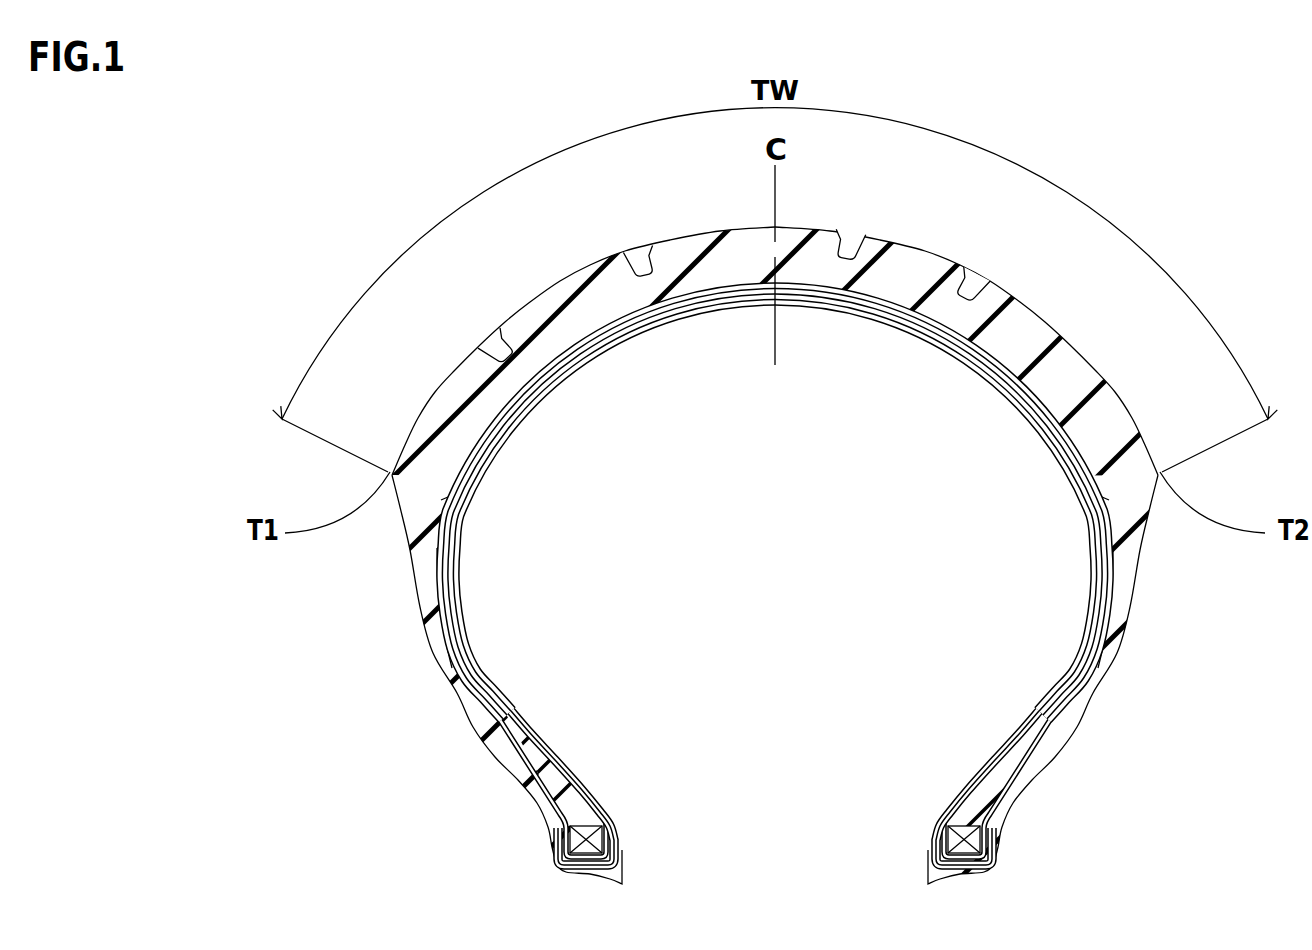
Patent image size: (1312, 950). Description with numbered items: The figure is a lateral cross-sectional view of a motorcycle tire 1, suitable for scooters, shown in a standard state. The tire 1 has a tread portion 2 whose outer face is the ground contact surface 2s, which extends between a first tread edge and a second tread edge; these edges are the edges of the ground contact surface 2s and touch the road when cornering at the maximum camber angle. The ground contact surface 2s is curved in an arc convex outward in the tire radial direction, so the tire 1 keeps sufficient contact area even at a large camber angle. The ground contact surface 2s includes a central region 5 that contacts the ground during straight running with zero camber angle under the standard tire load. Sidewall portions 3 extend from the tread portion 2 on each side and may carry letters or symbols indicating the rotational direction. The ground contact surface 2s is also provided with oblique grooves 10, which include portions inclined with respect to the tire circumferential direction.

The motorcycle tire 1 is at (656, 525).
The tread portion 2 is at (656, 525).
The ground contact surface 2s is at (937, 257).
The sidewall portion 3 is at (440, 706).
The central region 5 is at (687, 228).
The oblique groove 10 is at (853, 245).